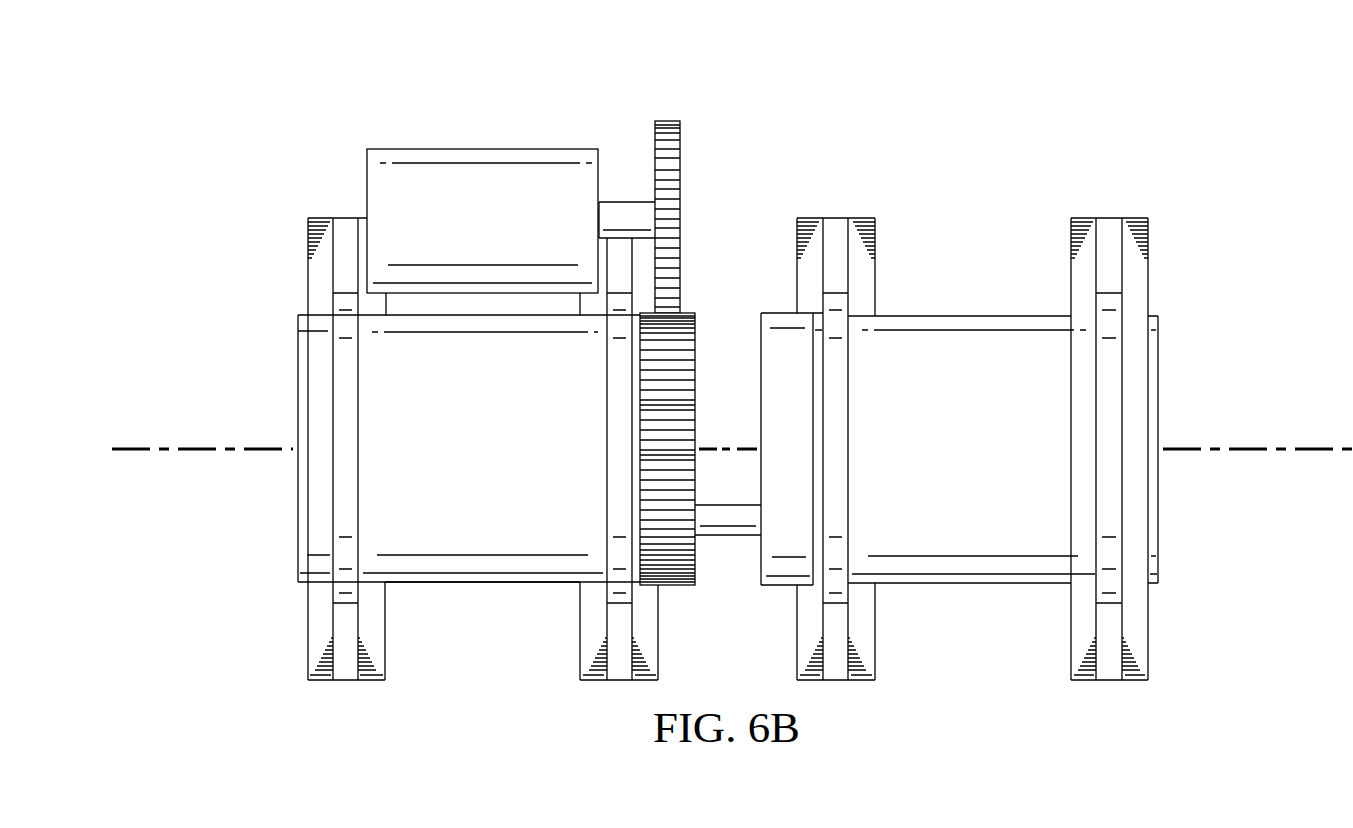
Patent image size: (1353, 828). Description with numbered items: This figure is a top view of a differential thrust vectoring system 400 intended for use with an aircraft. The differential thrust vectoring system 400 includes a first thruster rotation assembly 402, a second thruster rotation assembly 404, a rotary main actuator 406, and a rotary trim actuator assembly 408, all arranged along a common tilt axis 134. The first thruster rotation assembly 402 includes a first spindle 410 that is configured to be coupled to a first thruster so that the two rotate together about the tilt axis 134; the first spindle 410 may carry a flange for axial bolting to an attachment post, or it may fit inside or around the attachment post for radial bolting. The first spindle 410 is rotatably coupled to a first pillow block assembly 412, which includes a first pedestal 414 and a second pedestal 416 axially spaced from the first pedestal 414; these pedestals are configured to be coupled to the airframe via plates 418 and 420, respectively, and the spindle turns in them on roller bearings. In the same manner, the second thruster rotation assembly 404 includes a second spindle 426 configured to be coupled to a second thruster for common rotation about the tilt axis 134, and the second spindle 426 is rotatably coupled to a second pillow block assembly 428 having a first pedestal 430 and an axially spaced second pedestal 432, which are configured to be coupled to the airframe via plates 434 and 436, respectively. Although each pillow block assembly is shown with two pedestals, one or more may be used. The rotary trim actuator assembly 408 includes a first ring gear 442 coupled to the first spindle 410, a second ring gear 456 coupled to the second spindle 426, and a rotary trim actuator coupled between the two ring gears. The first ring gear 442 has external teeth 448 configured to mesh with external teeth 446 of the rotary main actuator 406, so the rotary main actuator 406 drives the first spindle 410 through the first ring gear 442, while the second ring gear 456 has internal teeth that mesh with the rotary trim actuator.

The tilt axis 134 is at (131, 447).
The differential thrust vectoring system 400 is at (200, 57).
The first thruster rotation assembly 402 is at (290, 372).
The second thruster rotation assembly 404 is at (1172, 364).
The rotary main actuator 406 is at (487, 149).
The rotary trim actuator assembly 408 is at (771, 305).
The first spindle 410 is at (465, 583).
The first pillow block assembly 412 is at (320, 210).
The first pedestal 414 is at (617, 505).
The second pedestal 416 is at (350, 493).
The plate 418 is at (580, 638).
The plate 420 is at (306, 638).
The second spindle 426 is at (995, 315).
The second pillow block assembly 428 is at (1114, 208).
The first pedestal 430 is at (838, 477).
The second pedestal 432 is at (1105, 480).
The plate 434 is at (877, 282).
The plate 436 is at (1149, 638).
The first ring gear 442 is at (682, 585).
The external teeth 446 is at (668, 121).
The external teeth 448 is at (648, 417).
The second ring gear 456 is at (780, 587).